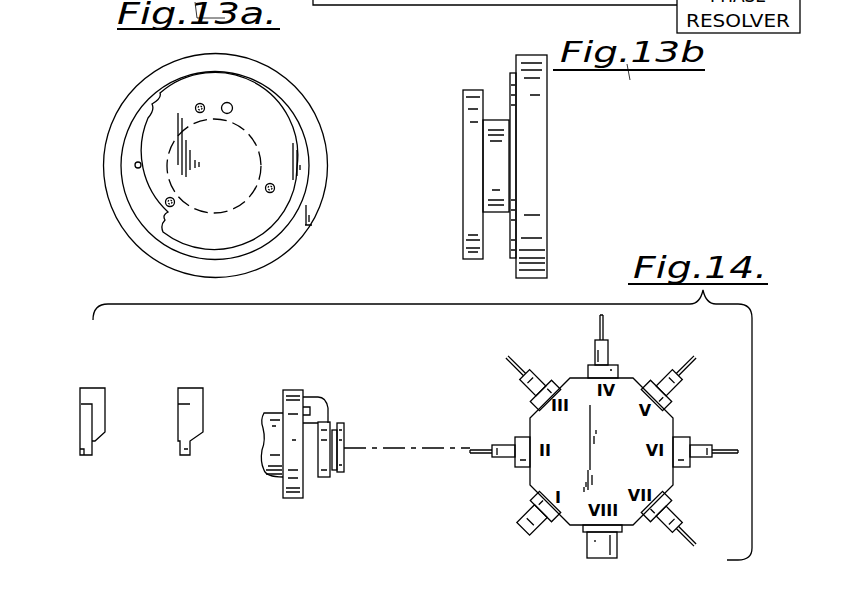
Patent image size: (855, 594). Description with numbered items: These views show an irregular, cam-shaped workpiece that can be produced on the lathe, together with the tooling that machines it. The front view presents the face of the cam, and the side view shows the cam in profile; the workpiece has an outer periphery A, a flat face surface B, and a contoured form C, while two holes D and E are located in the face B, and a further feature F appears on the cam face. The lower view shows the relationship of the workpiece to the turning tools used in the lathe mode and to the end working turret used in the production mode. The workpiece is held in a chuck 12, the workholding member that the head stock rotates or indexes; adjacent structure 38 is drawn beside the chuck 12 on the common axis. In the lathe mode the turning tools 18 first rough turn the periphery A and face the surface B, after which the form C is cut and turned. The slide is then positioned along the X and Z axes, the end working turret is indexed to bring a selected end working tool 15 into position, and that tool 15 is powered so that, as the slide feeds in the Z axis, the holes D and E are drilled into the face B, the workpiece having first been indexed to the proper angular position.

In FIG. 13B, the periphery A is at (480, 68).
In FIG. 13B, the face surface B is at (463, 120).
In FIG. 13B, the form C is at (497, 213).
In FIG. 13A, the hole D is at (173, 206).
In FIG. 13A, the hole E is at (144, 160).
In FIG. 13A, the pin hole F is at (226, 114).
In FIG. 14, the turning tools 18 is at (178, 405).
In FIG. 14, the housing body 38 is at (270, 457).
In FIG. 14, the chuck 12 is at (290, 487).
In FIG. 14, the end working tools 15 is at (478, 450).